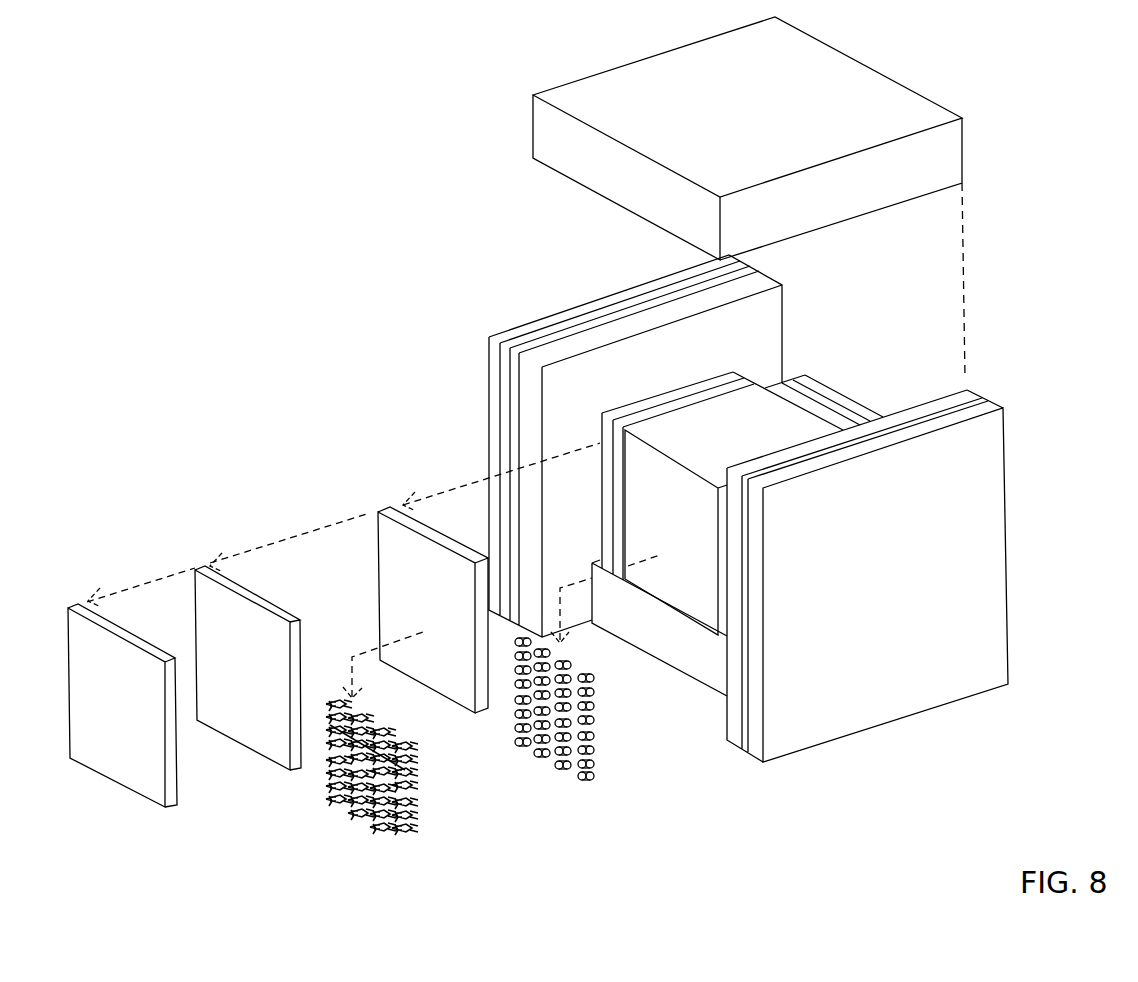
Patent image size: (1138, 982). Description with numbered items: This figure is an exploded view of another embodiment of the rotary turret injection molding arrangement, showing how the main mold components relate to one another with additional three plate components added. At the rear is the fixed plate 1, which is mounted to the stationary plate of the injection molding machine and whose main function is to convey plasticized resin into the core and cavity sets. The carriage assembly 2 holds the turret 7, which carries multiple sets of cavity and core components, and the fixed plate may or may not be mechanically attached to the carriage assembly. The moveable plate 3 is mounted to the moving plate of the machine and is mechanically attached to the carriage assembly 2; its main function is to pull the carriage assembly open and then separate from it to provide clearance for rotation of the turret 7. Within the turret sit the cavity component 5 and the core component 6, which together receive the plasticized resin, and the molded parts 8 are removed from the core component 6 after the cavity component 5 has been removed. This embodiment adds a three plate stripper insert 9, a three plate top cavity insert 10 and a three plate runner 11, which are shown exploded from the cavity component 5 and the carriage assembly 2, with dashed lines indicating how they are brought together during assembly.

The fixed plate 1 is at (572, 327).
The carriage assembly 2 is at (728, 700).
The moveable plate 3 is at (887, 715).
The cavity component 5 is at (383, 510).
The core component 6 is at (645, 507).
The turret 7 is at (703, 425).
The molded parts 8 is at (560, 762).
The three plate stripper insert 9 is at (200, 568).
The three plate top cavity insert 10 is at (72, 607).
The three plate runner 11 is at (347, 797).